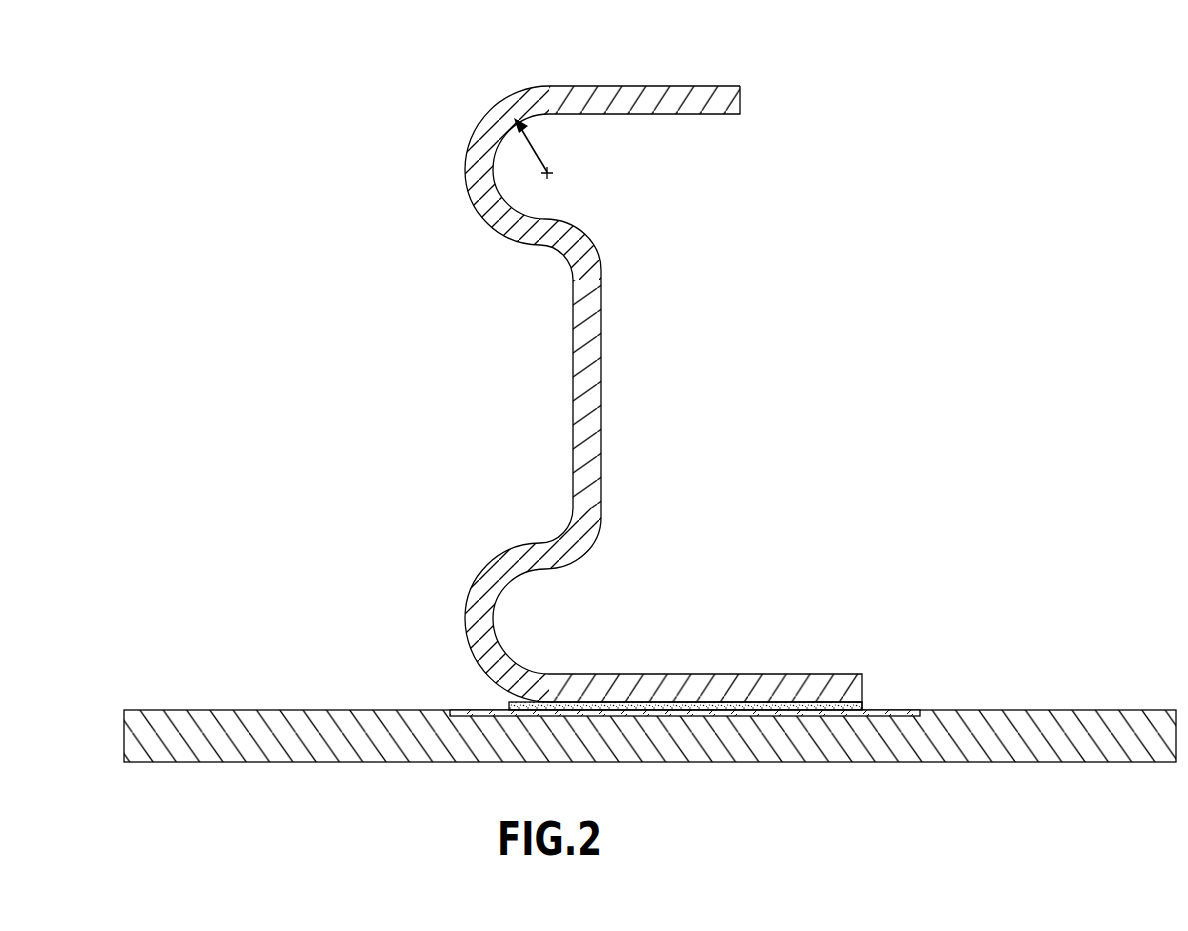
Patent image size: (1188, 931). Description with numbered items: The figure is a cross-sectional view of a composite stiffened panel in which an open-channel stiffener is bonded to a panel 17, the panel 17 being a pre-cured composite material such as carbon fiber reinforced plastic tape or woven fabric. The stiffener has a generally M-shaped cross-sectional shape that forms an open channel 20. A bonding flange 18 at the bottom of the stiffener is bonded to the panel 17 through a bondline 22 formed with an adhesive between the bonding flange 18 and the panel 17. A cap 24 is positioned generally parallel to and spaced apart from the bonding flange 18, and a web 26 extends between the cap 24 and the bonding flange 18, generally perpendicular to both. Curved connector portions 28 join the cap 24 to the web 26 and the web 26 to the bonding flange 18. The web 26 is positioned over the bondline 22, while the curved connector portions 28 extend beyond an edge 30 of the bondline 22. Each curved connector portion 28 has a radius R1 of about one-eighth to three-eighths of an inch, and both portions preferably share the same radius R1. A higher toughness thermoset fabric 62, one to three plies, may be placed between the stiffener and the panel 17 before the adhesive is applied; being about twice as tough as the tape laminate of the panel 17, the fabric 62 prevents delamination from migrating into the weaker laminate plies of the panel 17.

The panel 17 is at (1121, 728).
The bonding flange 18 is at (767, 683).
The open channel 20 is at (672, 371).
The bondline 22 is at (863, 706).
The cap 24 is at (708, 86).
The web 26 is at (573, 380).
The curved connector portions 28 is at (466, 163).
The edge of the bondline 30 is at (508, 703).
The higher toughness thermoset fabric 62 is at (880, 714).
The radius R1 is at (543, 148).